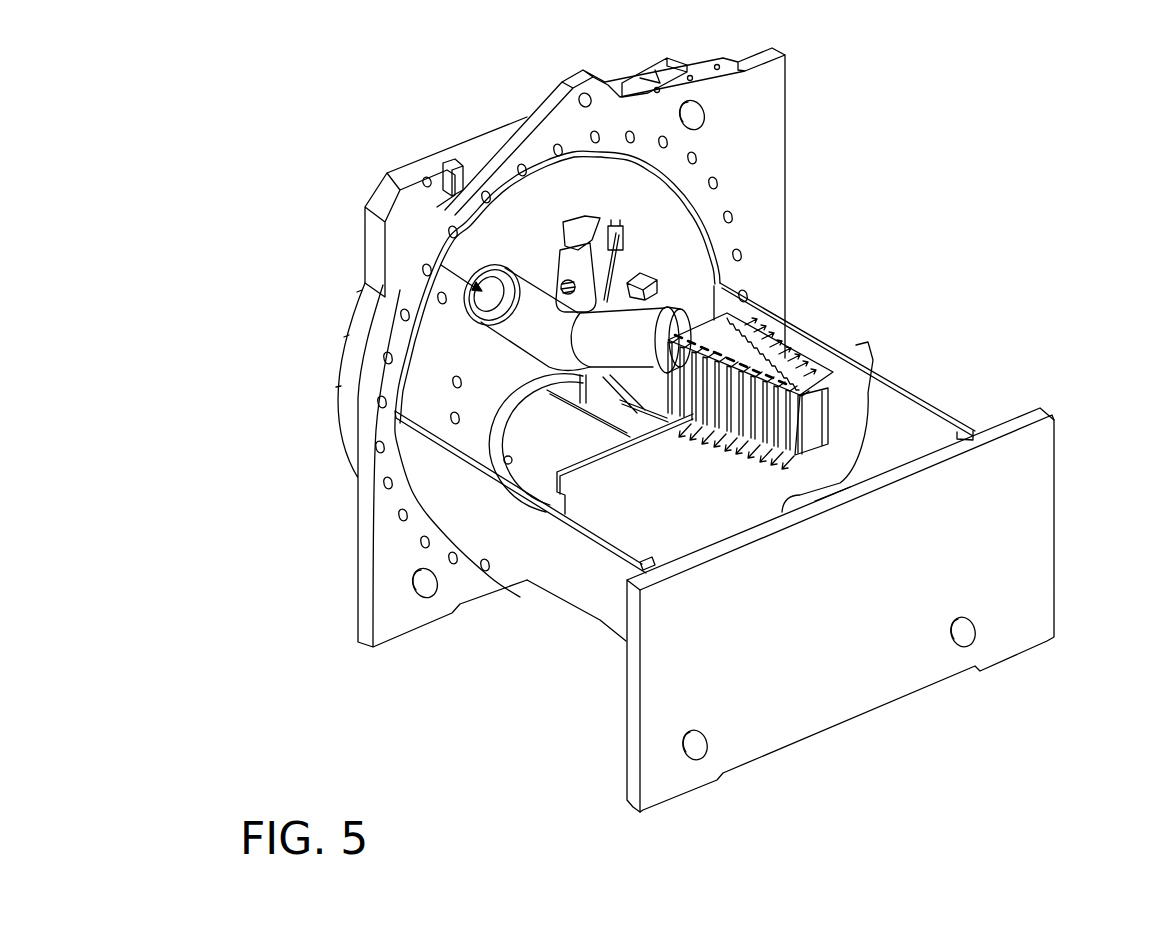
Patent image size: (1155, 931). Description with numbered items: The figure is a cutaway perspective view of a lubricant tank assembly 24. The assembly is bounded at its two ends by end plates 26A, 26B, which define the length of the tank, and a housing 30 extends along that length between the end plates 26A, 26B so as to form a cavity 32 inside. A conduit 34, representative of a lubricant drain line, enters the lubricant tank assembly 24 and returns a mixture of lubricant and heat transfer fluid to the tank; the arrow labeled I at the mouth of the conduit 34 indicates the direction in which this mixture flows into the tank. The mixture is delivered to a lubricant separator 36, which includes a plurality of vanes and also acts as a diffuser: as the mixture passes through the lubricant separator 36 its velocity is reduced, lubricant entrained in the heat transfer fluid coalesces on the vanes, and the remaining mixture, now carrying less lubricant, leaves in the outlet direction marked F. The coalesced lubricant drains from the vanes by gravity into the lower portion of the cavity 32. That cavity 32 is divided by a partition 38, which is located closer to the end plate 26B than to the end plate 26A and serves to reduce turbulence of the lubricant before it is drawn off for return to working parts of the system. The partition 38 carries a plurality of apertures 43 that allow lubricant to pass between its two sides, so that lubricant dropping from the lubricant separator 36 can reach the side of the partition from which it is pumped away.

The lubricant tank assembly 24 is at (884, 90).
The end plate 26A is at (785, 152).
The end plate 26B is at (1056, 520).
The housing 30 is at (590, 594).
The cavity 32 is at (938, 420).
The conduit 34 is at (516, 342).
The lubricant separator 36 is at (840, 413).
The partition 38 is at (628, 507).
The apertures 43 is at (835, 500).